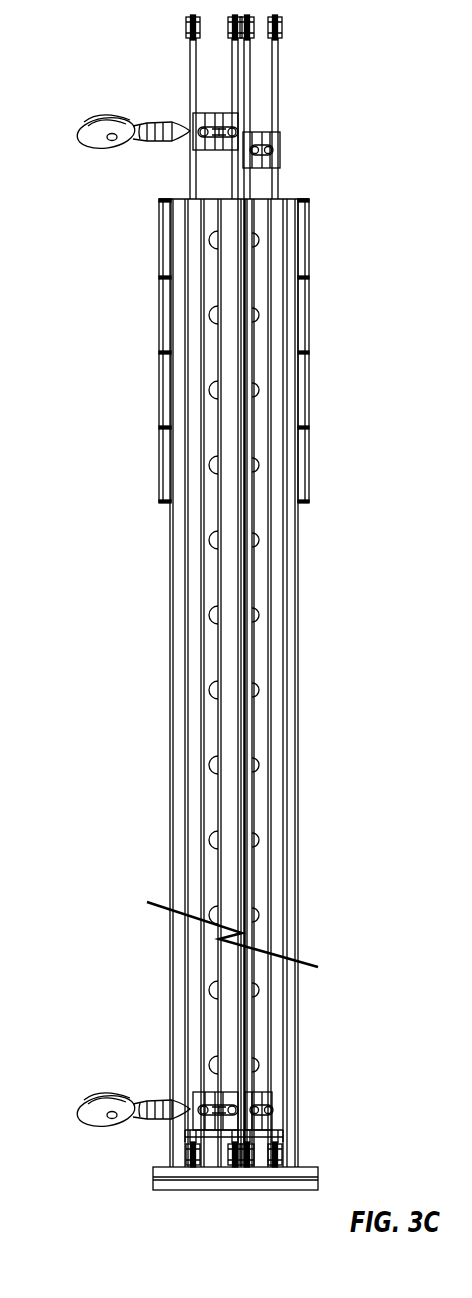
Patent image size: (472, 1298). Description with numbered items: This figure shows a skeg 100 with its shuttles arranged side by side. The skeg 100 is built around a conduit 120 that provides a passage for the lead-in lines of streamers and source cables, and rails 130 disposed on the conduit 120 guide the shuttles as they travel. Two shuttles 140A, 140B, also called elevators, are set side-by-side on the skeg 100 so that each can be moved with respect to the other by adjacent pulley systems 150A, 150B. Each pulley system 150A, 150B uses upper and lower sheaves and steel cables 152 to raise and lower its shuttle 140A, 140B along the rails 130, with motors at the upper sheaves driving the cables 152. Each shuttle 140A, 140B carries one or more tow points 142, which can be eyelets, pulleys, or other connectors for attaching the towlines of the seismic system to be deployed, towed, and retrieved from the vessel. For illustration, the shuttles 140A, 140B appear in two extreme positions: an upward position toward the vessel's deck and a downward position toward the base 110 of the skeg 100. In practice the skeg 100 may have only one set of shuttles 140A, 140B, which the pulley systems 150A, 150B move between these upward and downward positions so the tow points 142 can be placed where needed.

The skeg 100 is at (42, 236).
The base 110 is at (153, 1175).
The conduit 120 is at (171, 605).
The rails 130 is at (219, 732).
The shuttle 140A is at (192, 115).
The shuttle 140B is at (280, 136).
The tow point 142 is at (266, 155).
The pulley system 150A is at (178, 28).
The pulley system 150B is at (294, 30).
The tension rod 152 is at (278, 80).